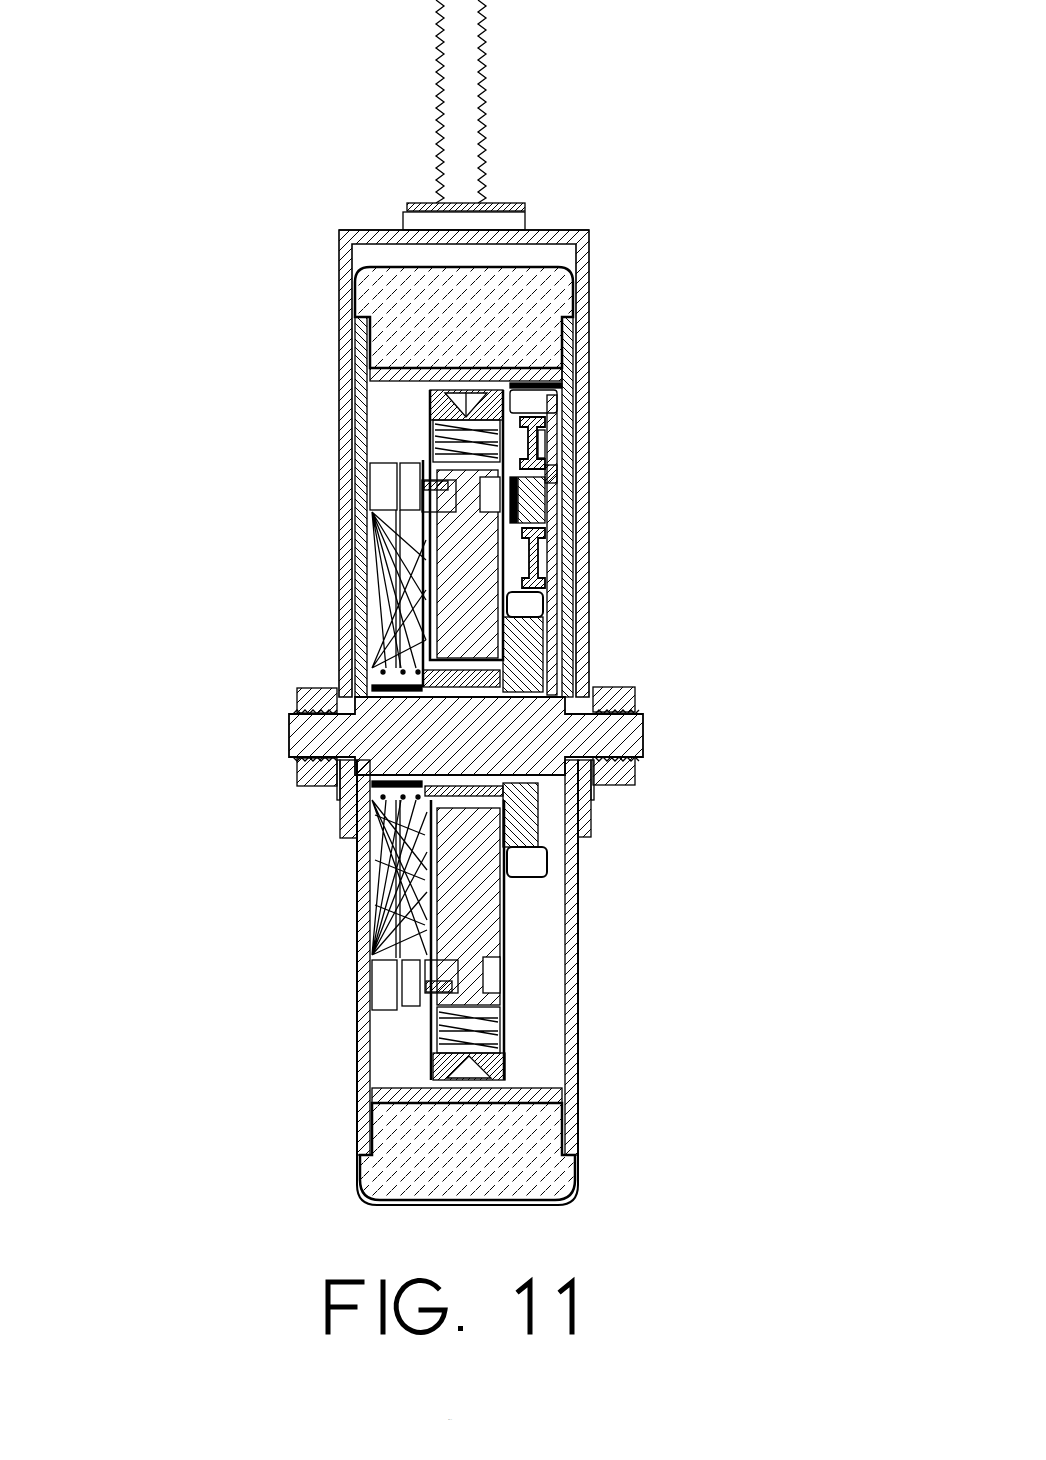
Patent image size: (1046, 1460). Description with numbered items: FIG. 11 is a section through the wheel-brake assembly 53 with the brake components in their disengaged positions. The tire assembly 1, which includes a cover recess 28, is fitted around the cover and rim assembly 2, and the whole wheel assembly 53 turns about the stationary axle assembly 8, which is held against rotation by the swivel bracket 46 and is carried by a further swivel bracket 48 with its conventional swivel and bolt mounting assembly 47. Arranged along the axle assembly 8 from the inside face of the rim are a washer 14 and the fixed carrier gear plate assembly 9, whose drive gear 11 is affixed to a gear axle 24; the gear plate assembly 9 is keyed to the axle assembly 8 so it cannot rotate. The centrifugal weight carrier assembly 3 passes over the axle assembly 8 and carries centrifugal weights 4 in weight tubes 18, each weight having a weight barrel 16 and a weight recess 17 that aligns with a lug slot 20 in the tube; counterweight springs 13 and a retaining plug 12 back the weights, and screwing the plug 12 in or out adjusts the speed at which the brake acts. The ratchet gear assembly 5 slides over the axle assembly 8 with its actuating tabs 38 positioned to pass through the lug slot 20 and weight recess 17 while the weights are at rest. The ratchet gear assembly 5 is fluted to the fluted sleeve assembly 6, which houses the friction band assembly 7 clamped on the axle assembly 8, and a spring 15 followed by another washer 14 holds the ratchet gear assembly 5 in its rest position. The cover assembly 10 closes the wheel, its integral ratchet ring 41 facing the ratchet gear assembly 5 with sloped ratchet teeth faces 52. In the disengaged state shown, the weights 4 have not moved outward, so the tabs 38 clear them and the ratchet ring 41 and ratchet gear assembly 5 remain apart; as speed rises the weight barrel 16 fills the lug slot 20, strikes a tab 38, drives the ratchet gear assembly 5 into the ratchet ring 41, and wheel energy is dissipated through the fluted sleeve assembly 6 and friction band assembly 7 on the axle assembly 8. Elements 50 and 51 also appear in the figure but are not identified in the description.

The tire assembly 1 is at (545, 1195).
The cover and rim assembly 2 is at (575, 1052).
The centrifugal weight carrier assembly 3 is at (543, 852).
The centrifugal weights 4 is at (455, 580).
The ratchet gear assembly 5 is at (375, 930).
The fluted sleeve assembly 6 is at (337, 795).
The friction band assembly 7 is at (345, 710).
The axle assembly 8 is at (612, 783).
The fixed carrier gear plate assembly 9 is at (573, 610).
The cover assembly 10 is at (358, 393).
The drive gear 11 is at (538, 442).
The retaining plug 12 is at (510, 370).
The counterweight springs 13 is at (510, 407).
The washer 14 is at (378, 778).
The spring 15 is at (335, 677).
The weight barrel 16 is at (558, 383).
The weight recess 17 is at (528, 500).
The weight tube 18 is at (458, 568).
The lug slot 20 is at (428, 520).
The gear axle 24 is at (490, 489).
The cover recess 28 is at (372, 330).
The actuating tabs 38 is at (420, 495).
The ratchet ring 41 is at (380, 850).
The swivel bracket 46 is at (345, 268).
The swivel and bolt mounting assembly 47 is at (480, 145).
The swivel bracket 48 is at (636, 778).
The end plate 50 is at (525, 211).
The washer 51 is at (538, 400).
The ratchet teeth faces 52 is at (410, 887).
The wheel-brake assembly 53 is at (390, 265).